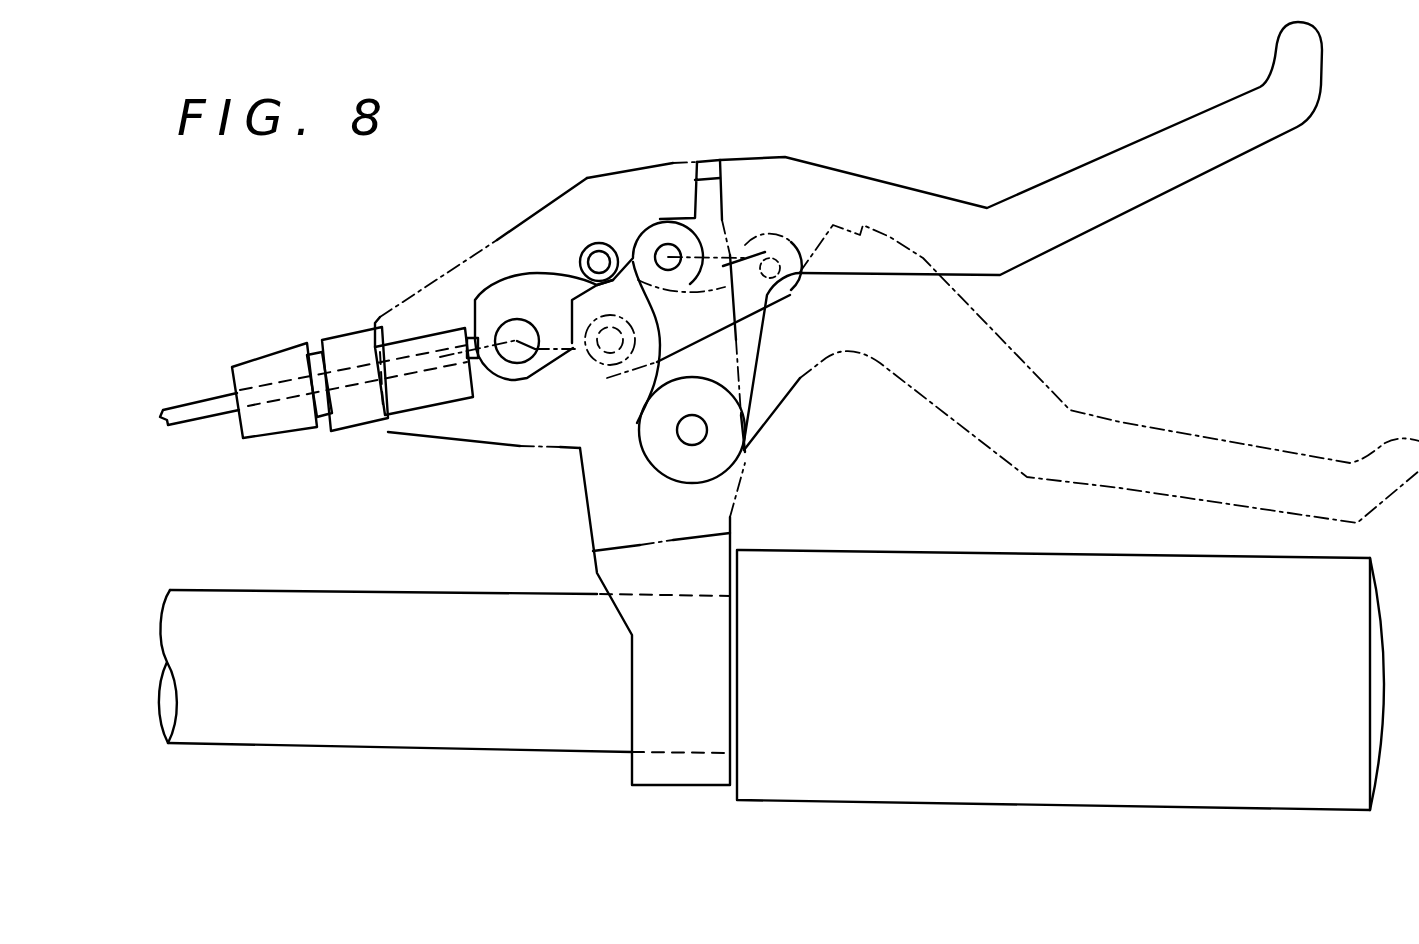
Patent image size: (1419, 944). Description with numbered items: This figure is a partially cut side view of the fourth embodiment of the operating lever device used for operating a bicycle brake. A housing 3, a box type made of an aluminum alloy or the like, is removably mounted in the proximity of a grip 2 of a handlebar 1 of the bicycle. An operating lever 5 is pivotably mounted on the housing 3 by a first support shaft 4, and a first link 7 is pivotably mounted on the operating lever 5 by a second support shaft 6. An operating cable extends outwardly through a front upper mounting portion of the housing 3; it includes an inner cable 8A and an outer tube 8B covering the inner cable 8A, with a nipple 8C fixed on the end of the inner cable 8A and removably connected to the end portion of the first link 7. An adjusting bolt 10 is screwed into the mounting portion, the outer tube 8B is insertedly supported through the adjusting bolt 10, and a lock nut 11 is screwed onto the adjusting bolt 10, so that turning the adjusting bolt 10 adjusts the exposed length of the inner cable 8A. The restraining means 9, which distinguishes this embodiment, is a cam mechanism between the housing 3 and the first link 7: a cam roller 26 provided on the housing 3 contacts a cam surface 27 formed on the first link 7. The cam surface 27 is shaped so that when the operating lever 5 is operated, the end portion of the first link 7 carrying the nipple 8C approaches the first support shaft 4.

The handlebar 1 is at (418, 750).
The grip 2 is at (963, 805).
The housing 3 is at (592, 527).
The first support shaft 4 is at (695, 432).
The operating lever 5 is at (910, 190).
The second support shaft 6 is at (667, 254).
The first link 7 is at (552, 367).
The inner cable 8A is at (477, 300).
The outer tube 8B is at (212, 420).
The nipple 8C is at (512, 362).
The restraining means 9 is at (568, 246).
The adjusting bolt 10 is at (275, 362).
The lock nut 11 is at (353, 433).
The cam roller 26 is at (603, 244).
The cam surface 27 is at (477, 335).